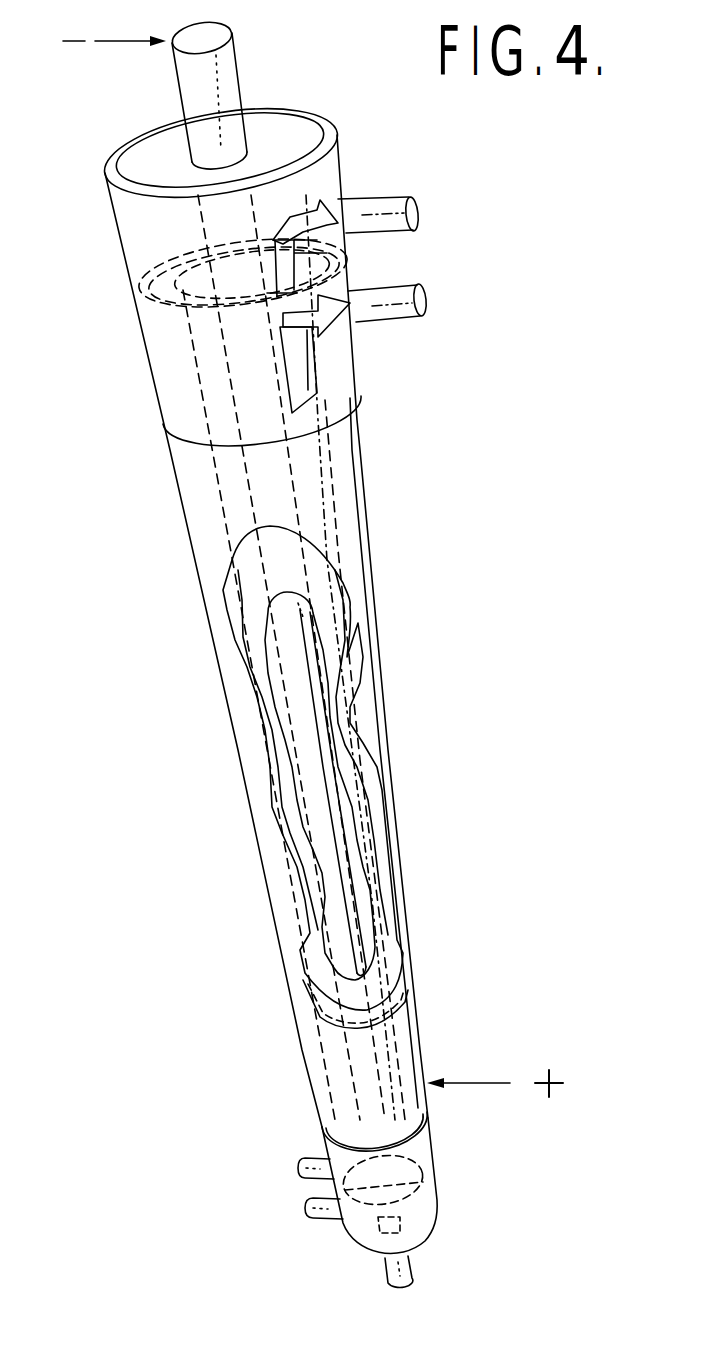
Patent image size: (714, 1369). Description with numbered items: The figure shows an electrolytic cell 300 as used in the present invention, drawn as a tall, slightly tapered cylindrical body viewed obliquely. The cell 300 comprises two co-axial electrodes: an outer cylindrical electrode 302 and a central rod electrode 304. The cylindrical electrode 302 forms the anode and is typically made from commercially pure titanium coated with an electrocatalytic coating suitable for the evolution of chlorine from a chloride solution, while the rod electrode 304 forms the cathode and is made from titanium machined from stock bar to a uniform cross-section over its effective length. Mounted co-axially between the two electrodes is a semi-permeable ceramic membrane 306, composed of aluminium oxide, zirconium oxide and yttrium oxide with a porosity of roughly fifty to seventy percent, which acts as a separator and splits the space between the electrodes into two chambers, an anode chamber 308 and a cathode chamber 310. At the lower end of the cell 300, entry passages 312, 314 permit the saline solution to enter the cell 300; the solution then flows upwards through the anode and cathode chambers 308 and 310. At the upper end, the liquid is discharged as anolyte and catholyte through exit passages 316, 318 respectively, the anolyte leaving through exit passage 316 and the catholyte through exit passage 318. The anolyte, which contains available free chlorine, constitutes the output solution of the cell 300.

The electrolytic cell 300 is at (440, 593).
The cylindrical electrode 302 is at (197, 572).
The rod electrode 304 is at (327, 847).
The semi-permeable ceramic membrane 306 is at (298, 553).
The anode chamber 308 is at (233, 617).
The cathode chamber 310 is at (350, 797).
The entry passage 312 is at (307, 1210).
The entry passage 314 is at (300, 1170).
The exit passage 316 is at (424, 304).
The exit passage 318 is at (420, 216).